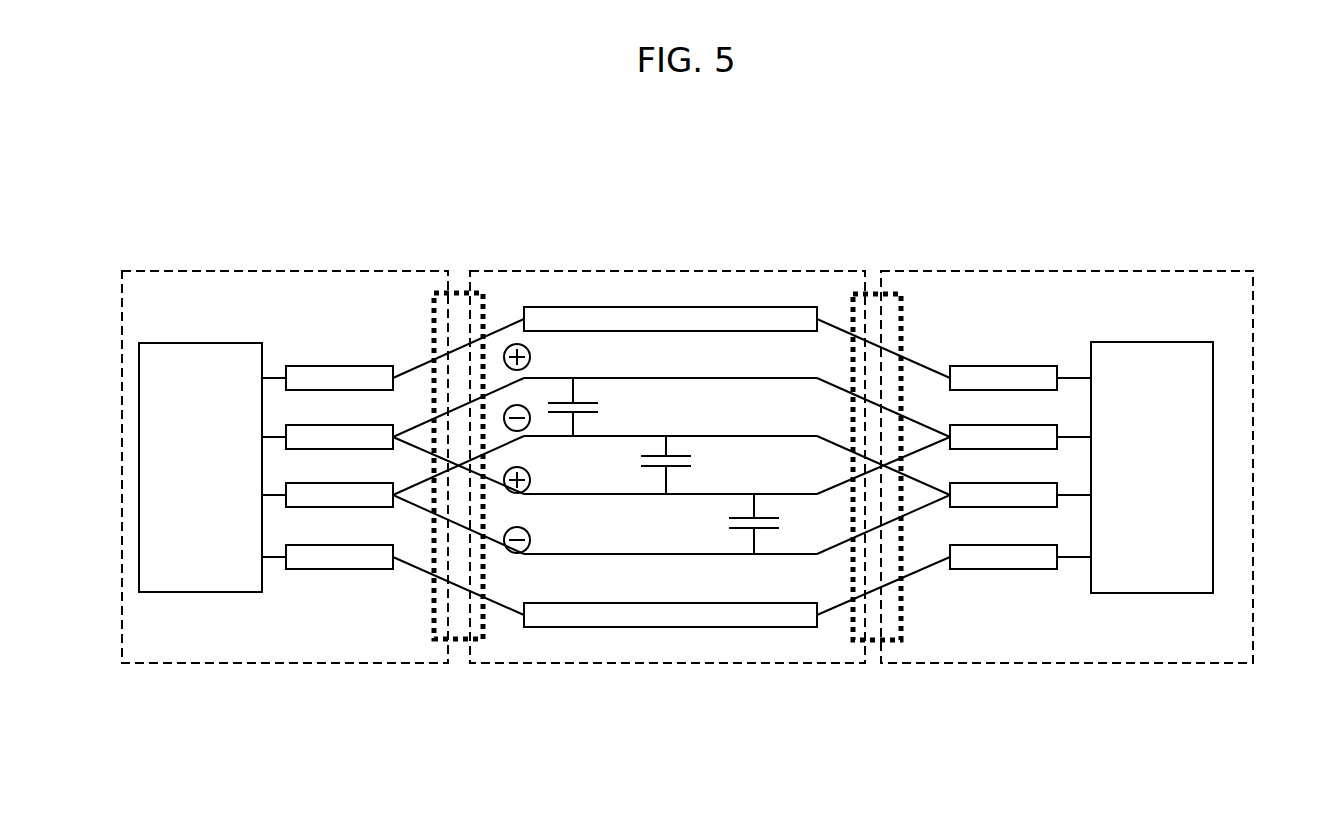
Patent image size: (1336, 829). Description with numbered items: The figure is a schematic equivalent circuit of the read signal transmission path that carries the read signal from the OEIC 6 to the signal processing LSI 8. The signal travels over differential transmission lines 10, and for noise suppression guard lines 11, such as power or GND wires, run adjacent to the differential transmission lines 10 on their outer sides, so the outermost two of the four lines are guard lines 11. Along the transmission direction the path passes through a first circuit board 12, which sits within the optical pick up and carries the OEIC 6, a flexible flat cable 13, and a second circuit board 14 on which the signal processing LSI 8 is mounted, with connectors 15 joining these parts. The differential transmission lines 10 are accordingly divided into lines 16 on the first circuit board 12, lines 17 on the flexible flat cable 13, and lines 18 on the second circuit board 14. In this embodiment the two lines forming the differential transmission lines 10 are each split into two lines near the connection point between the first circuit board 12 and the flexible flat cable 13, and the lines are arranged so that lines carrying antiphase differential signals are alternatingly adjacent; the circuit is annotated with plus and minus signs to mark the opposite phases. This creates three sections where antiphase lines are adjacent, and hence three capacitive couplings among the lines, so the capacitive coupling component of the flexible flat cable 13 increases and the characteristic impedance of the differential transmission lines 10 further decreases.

The OEIC 6 is at (152, 342).
The signal processing LSI 8 is at (1132, 342).
The differential transmission lines 10 is at (105, 425).
The guard lines 11 is at (105, 403).
The first circuit board 12 is at (272, 272).
The flexible flat cable 13 is at (668, 271).
The second circuit board 14 is at (1042, 272).
The connectors 15 is at (483, 293).
The lines on the first circuit board 16 is at (262, 695).
The lines on the flexible flat cable 17 is at (483, 695).
The lines on the second circuit board 18 is at (900, 695).